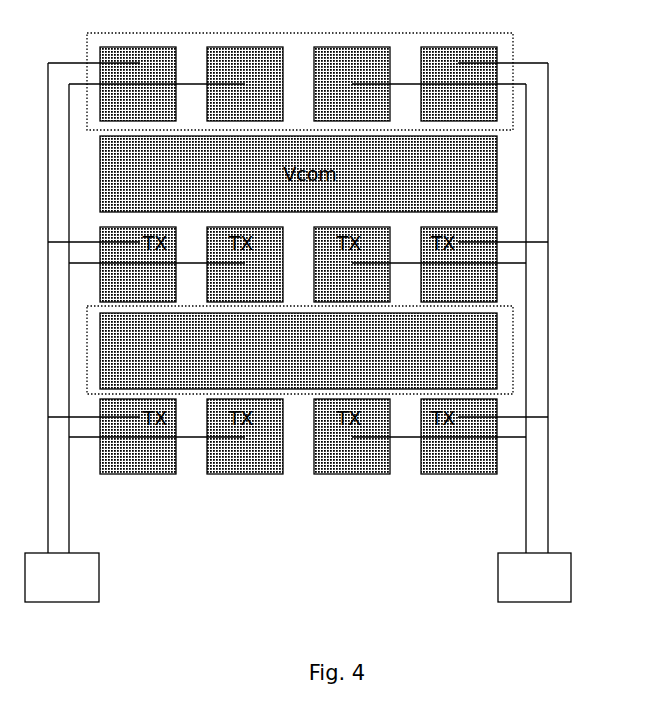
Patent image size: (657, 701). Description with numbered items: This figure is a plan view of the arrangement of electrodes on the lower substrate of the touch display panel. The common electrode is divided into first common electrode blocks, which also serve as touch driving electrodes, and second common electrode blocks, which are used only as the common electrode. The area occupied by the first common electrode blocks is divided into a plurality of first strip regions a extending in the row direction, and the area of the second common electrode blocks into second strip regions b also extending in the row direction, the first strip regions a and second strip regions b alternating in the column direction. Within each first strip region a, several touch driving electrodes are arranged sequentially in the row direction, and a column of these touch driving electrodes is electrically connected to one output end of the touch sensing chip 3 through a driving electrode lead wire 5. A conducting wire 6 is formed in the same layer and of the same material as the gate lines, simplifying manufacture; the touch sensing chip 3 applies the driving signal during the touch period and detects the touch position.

The first strip region a is at (513, 48).
The second strip region b is at (513, 350).
The driving electrode lead wire 5 is at (548, 203).
The conducting wire 6 is at (548, 416).
The touch sensing chip 3 is at (545, 565).